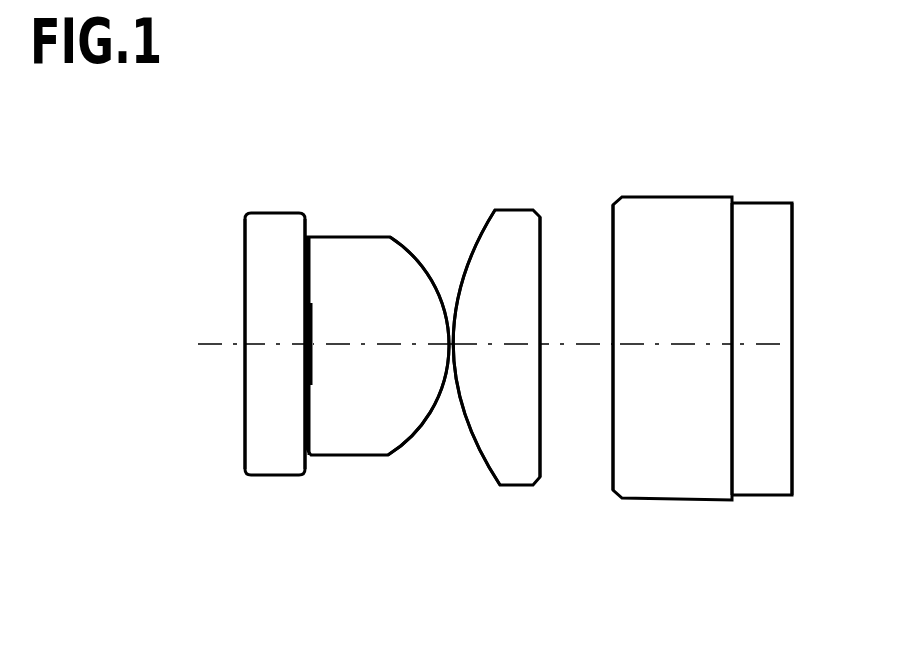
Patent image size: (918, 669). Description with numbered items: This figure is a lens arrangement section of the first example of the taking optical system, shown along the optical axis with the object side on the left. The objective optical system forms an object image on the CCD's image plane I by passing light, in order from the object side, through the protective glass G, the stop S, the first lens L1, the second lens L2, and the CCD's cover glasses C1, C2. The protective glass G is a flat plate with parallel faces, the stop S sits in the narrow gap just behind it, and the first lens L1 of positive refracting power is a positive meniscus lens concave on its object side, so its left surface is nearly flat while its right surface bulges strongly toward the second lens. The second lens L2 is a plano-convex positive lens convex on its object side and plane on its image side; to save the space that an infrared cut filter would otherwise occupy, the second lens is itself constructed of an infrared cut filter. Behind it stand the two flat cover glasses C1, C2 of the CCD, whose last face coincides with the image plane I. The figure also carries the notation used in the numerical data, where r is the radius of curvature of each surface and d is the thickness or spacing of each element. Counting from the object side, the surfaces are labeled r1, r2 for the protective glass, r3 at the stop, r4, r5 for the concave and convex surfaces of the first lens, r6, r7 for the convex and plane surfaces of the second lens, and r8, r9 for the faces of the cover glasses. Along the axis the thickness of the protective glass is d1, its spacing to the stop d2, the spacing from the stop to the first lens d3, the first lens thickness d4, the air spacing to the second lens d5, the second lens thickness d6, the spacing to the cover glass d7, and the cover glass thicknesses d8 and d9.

The protective glass G is at (262, 463).
The stop S is at (313, 385).
The first lens L1 is at (445, 158).
The second lens L2 is at (545, 158).
The CCD cover glass C1 is at (700, 470).
The CCD cover glass C2 is at (762, 473).
The image plane I is at (792, 455).
The radius of curvature of first surface r1 is at (245, 262).
The radius of curvature of second surface r2 is at (303, 262).
The radius of curvature of third surface r3 is at (309, 320).
The radius of curvature of fourth surface r4 is at (313, 328).
The radius of curvature of fifth surface r5 is at (408, 252).
The radius of curvature of sixth surface r6 is at (466, 263).
The radius of curvature of seventh surface r7 is at (541, 270).
The radius of curvature of eighth surface r8 is at (612, 257).
The radius of curvature of ninth surface r9 is at (733, 235).
The thickness of protective glass d1 is at (275, 357).
The spacing from protective glass to stop d2 is at (304, 357).
The spacing from stop to first lens d3 is at (312, 360).
The thickness of first lens d4 is at (380, 357).
The spacing between first and second lenses d5 is at (448, 355).
The thickness of second lens d6 is at (496, 358).
The spacing from second lens to cover glass d7 is at (576, 358).
The thickness of first cover glass d8 is at (672, 358).
The thickness of second cover glass d9 is at (762, 358).